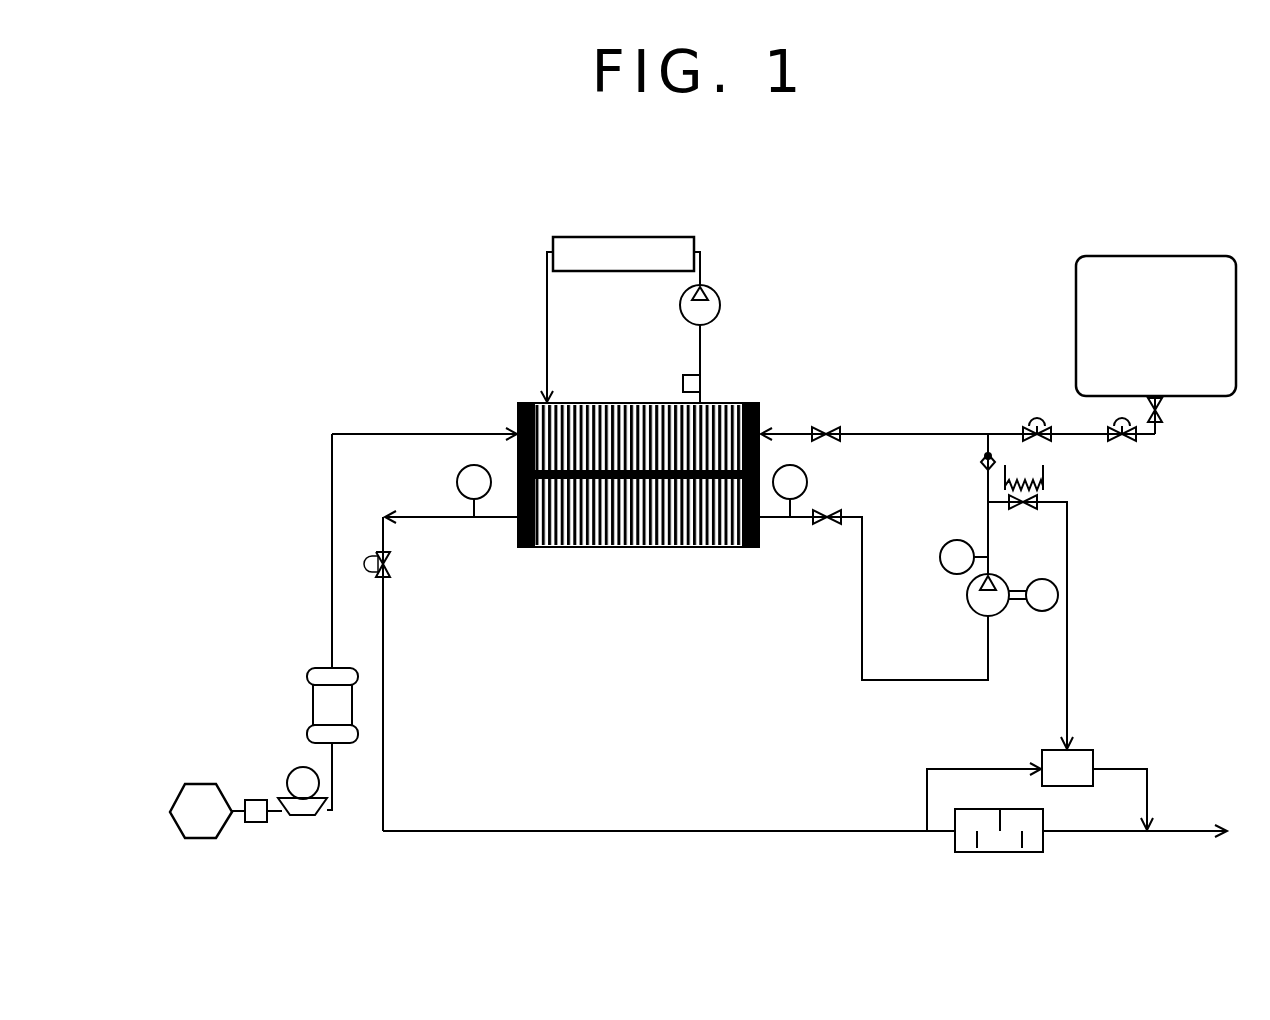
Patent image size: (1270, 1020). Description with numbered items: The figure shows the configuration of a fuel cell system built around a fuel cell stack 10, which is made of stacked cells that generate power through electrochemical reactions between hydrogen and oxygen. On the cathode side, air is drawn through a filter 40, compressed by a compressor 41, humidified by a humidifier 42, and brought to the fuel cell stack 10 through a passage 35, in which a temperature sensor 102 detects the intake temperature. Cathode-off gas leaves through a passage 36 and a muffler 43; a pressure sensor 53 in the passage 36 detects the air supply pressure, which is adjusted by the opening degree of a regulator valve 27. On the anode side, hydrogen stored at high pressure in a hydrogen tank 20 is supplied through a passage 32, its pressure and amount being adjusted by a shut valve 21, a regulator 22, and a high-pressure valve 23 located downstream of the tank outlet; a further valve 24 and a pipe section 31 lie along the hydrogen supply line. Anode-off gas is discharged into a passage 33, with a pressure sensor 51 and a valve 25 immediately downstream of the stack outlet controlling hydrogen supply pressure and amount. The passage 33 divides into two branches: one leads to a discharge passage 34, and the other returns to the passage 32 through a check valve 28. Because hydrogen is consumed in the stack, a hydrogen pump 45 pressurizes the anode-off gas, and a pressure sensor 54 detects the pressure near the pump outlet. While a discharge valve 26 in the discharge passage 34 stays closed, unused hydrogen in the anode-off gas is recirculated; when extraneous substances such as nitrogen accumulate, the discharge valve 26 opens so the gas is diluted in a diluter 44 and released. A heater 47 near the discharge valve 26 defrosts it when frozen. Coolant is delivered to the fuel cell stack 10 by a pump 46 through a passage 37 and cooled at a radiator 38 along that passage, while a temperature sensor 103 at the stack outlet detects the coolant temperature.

The fuel cell stack 10 is at (548, 548).
The hydrogen tank 20 is at (1076, 311).
The shut valve 21 is at (1162, 412).
The regulator 22 is at (1122, 441).
The high-pressure valve 23 is at (1042, 425).
The shutoff valve 24 is at (840, 438).
The valve 25 is at (827, 524).
The discharge valve 26 is at (1023, 509).
The regulator valve 27 is at (392, 568).
The check valve 28 is at (982, 464).
The hydrogen supply pipe 31 is at (1075, 435).
The passage 32 is at (923, 433).
The passage 33 is at (898, 681).
The discharge passage 34 is at (1068, 650).
The passage 35 is at (410, 433).
The passage 36 is at (490, 519).
The passage 37 is at (702, 262).
The radiator 38 is at (694, 243).
The filter 40 is at (200, 784).
The compressor 41 is at (305, 816).
The humidifier 42 is at (318, 721).
The muffler 43 is at (1043, 843).
The diluter 44 is at (1093, 755).
The hydrogen pump 45 is at (1003, 612).
The pump 46 is at (720, 305).
The heater 47 is at (1043, 480).
The pressure sensor 51 is at (807, 482).
The pressure sensor 53 is at (457, 482).
The pressure sensor 54 is at (940, 556).
The temperature sensor 102 is at (256, 822).
The temperature sensor 103 is at (683, 384).